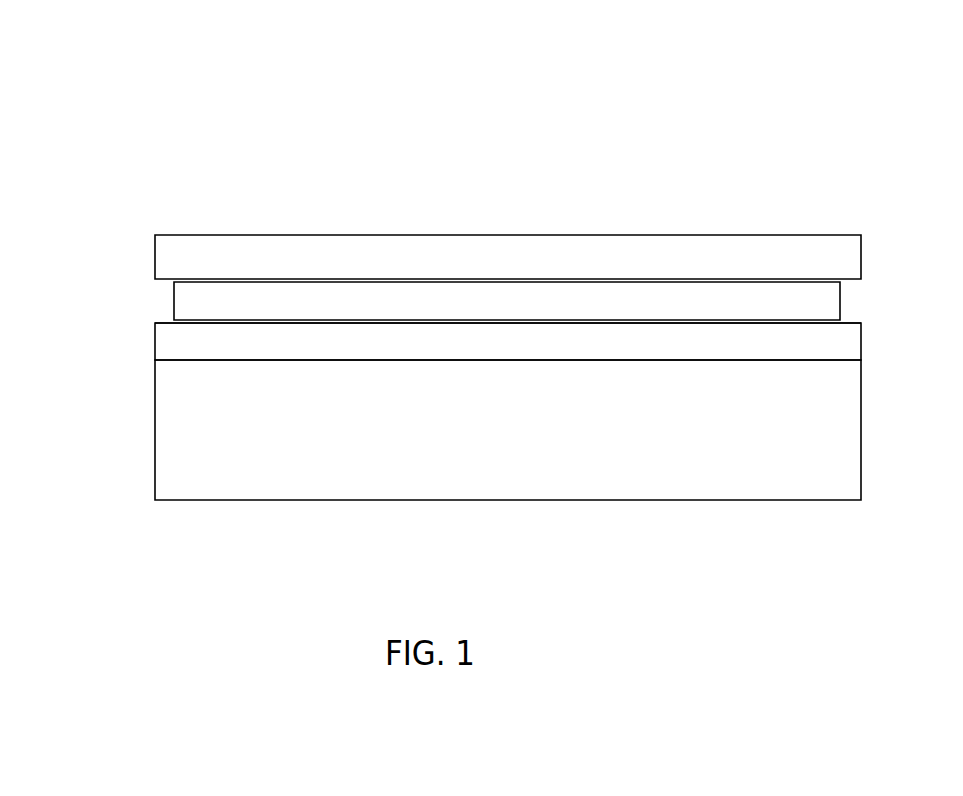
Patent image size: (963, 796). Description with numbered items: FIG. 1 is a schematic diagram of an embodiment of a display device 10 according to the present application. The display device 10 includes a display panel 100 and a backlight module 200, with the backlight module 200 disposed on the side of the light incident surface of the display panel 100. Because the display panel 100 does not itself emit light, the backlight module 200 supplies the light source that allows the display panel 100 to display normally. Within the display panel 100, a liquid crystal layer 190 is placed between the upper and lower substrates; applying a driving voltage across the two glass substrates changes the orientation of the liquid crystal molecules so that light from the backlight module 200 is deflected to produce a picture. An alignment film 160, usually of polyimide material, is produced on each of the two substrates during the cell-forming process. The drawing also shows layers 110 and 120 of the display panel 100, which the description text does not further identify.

The display device 10 is at (167, 66).
The display panel 100 is at (155, 237).
The cover layer 110 is at (205, 278).
The base layer 120 is at (263, 340).
The alignment film 160 is at (546, 322).
The liquid crystal layer 190 is at (425, 310).
The backlight module 200 is at (340, 432).